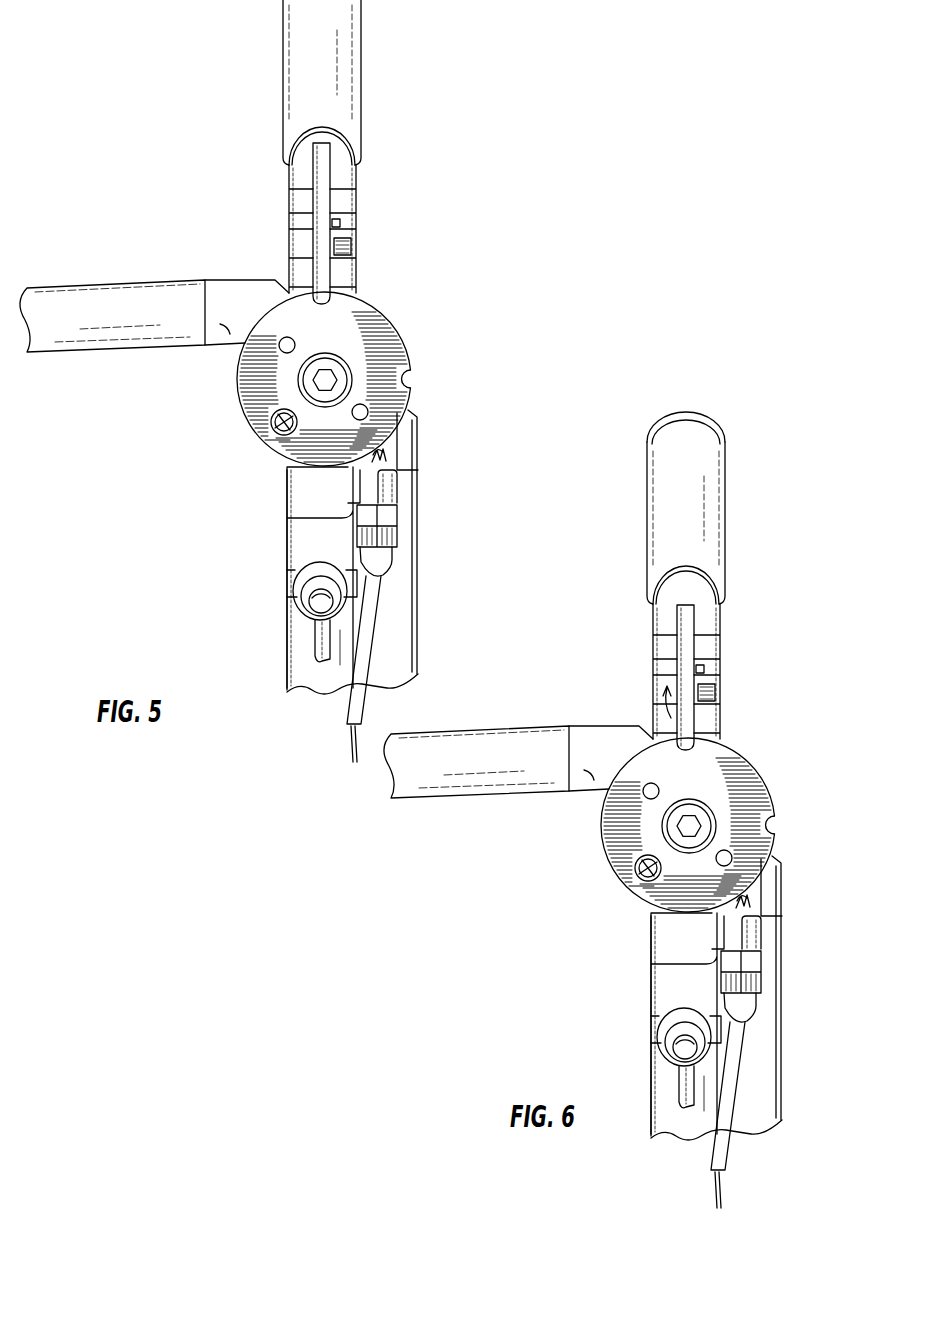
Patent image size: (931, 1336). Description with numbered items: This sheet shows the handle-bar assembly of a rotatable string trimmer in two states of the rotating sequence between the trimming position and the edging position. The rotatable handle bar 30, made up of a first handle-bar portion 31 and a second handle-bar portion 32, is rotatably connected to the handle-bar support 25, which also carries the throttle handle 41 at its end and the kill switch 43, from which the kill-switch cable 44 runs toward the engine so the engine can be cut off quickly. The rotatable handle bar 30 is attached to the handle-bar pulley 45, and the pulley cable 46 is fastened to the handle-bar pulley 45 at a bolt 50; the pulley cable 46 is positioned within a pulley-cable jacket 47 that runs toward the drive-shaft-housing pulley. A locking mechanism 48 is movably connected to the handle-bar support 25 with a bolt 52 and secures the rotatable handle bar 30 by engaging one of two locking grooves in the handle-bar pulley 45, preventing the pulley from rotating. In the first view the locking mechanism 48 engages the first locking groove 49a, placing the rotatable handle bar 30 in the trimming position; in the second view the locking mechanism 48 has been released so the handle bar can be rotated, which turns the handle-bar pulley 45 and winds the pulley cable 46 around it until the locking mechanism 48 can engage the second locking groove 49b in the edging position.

In FIG. 5, the handle-bar support 25 is at (290, 668).
In FIG. 6, the handle-bar support 25 is at (597, 1025).
In FIG. 5, the rotatable handle bar 30 is at (242, 293).
In FIG. 6, the rotatable handle bar 30 is at (603, 718).
In FIG. 5, the first handle-bar portion 31 is at (128, 297).
In FIG. 6, the first handle-bar portion 31 is at (476, 727).
In FIG. 5, the second handle-bar portion 32 is at (398, 572).
In FIG. 6, the second handle-bar portion 32 is at (794, 988).
In FIG. 5, the throttle handle 41 is at (353, 65).
In FIG. 6, the throttle handle 41 is at (737, 508).
In FIG. 5, the kill switch 43 is at (320, 603).
In FIG. 6, the kill switch 43 is at (603, 1019).
In FIG. 5, the kill-switch cable 44 is at (315, 638).
In FIG. 6, the kill-switch cable 44 is at (608, 1055).
In FIG. 5, the handle-bar pulley 45 is at (247, 380).
In FIG. 6, the handle-bar pulley 45 is at (645, 825).
In FIG. 5, the pulley cable 46 is at (385, 453).
In FIG. 6, the pulley cable 46 is at (781, 898).
In FIG. 5, the pulley-cable jacket 47 is at (362, 642).
In FIG. 6, the pulley-cable jacket 47 is at (774, 1079).
In FIG. 5, the locking mechanism 48 is at (323, 172).
In FIG. 6, the locking mechanism 48 is at (748, 676).
In FIG. 5, the first locking groove 49a is at (327, 300).
In FIG. 6, the first locking groove 49a is at (760, 723).
In FIG. 5, the second locking groove 49b is at (405, 377).
In FIG. 6, the second locking groove 49b is at (797, 796).
In FIG. 5, the bolt 50 is at (275, 428).
In FIG. 6, the bolt 50 is at (611, 904).
In FIG. 5, the bolt 52 is at (352, 253).
In FIG. 6, the bolt 52 is at (749, 682).